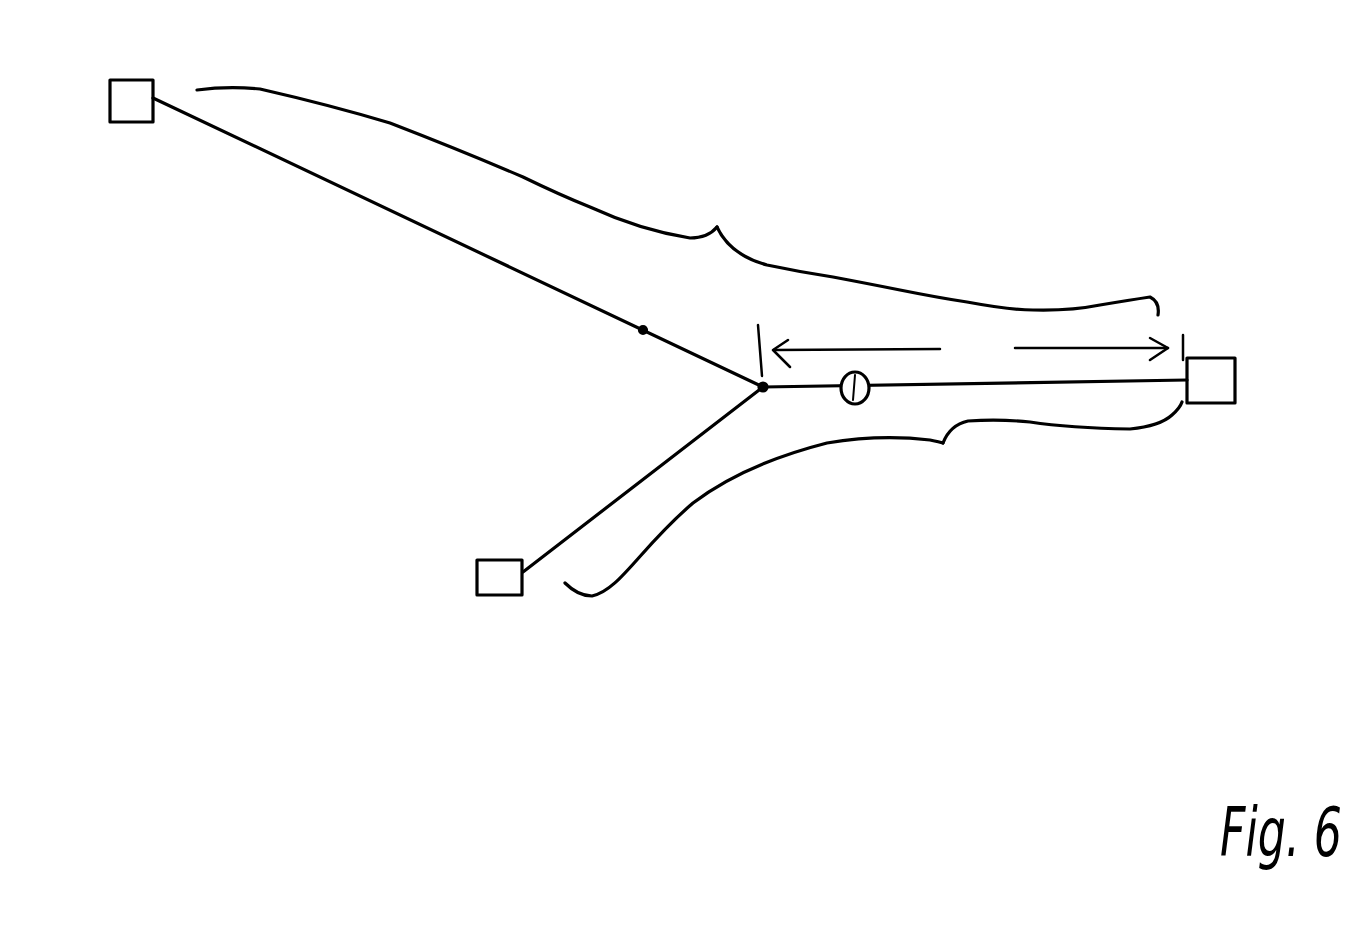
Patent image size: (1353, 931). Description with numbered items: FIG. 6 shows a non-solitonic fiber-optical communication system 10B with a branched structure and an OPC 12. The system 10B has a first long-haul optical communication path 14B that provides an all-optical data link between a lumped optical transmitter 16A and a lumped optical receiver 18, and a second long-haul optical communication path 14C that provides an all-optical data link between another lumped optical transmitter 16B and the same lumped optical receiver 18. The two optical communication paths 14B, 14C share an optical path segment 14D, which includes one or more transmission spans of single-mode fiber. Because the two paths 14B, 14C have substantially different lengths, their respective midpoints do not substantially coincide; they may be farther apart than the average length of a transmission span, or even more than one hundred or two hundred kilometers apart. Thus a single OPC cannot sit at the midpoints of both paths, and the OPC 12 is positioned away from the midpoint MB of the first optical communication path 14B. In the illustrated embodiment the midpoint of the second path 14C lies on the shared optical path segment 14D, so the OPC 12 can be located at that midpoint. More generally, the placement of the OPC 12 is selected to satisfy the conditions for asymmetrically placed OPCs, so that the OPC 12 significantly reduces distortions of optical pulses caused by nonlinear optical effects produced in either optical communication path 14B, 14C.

The non-solitonic fiber-optical communication system 10B is at (827, 135).
The OPC 12 is at (851, 405).
The first long-haul optical communication path 14B is at (677, 201).
The second long-haul optical communication path 14C is at (943, 443).
The shared optical path segment 14D is at (970, 352).
The lumped optical transmitter 16A is at (133, 98).
The lumped optical transmitter 16B is at (490, 580).
The lumped optical receiver 18 is at (1204, 376).
The path midpoint MB is at (645, 328).